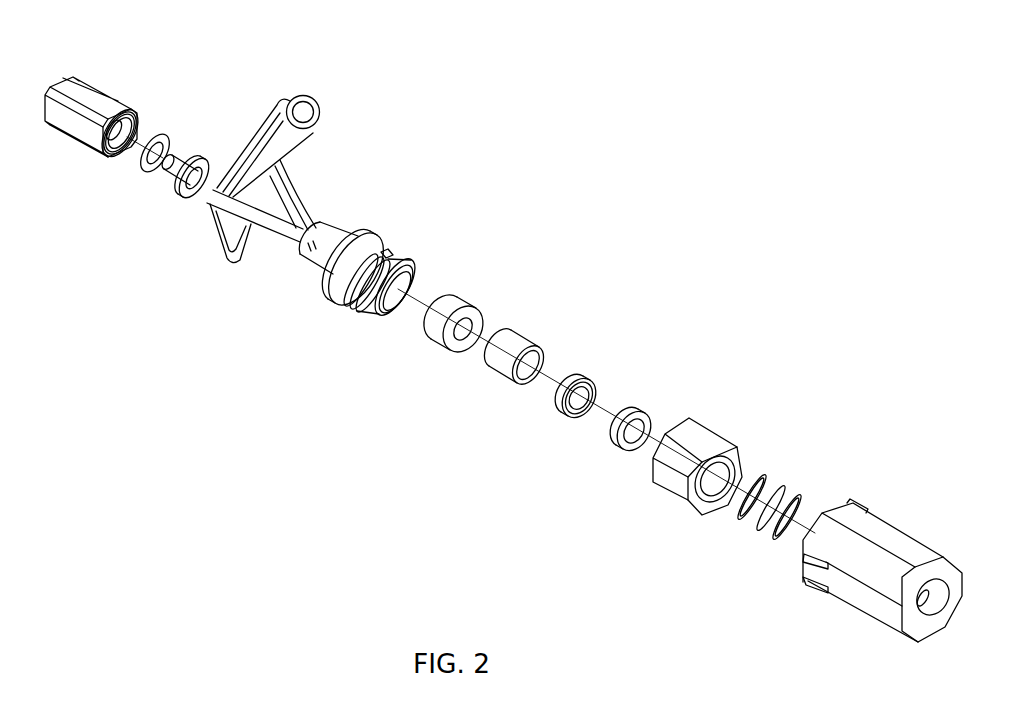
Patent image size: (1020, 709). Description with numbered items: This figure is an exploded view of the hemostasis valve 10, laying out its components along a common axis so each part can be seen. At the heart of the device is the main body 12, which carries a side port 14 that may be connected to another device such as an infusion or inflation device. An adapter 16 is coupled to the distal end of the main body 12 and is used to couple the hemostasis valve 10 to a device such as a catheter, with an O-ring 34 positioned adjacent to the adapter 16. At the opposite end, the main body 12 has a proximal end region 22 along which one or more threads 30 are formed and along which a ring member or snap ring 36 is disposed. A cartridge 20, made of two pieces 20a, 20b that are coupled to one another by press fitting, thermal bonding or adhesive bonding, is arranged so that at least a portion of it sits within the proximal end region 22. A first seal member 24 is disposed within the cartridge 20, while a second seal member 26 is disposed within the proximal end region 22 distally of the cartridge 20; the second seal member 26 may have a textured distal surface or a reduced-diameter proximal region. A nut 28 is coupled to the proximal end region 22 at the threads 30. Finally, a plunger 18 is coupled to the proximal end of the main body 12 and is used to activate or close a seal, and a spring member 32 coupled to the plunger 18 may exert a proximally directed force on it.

The hemostasis valve 10 is at (605, 210).
The main body 12 is at (264, 197).
The side port 14 is at (295, 138).
The adapter 16 is at (92, 97).
The plunger 18 is at (856, 600).
The cartridge 20 is at (569, 385).
The cartridge piece 20a is at (519, 342).
The cartridge piece 20b is at (642, 408).
The proximal end region 22 is at (382, 316).
The first seal member 24 is at (583, 381).
The second seal member 26 is at (461, 304).
The nut 28 is at (670, 489).
The threads 30 is at (359, 287).
The spring member 32 is at (774, 483).
The O-ring 34 is at (148, 169).
The snap ring 36 is at (332, 299).